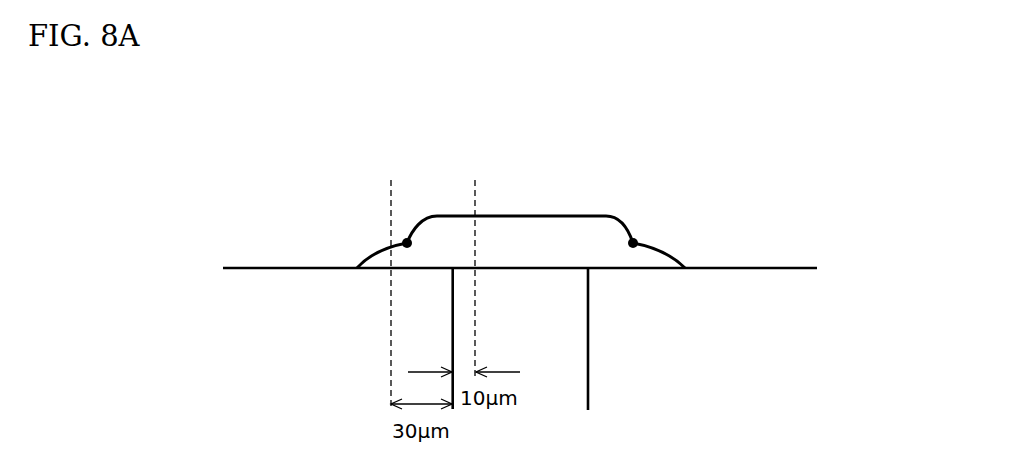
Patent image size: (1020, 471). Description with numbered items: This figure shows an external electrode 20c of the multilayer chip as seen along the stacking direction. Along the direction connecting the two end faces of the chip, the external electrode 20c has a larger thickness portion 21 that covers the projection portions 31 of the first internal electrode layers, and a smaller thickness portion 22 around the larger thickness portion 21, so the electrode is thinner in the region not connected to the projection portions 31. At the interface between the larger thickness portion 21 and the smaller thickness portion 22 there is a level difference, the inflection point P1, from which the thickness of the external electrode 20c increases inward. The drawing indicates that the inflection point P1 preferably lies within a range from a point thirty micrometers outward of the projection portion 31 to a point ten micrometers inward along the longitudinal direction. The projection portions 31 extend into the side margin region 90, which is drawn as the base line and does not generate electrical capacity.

The side margin region 90 is at (253, 292).
The projection portion 31 is at (528, 297).
The external electrode 20c is at (547, 191).
The larger thickness portion 21 is at (615, 228).
The smaller thickness portion 22 is at (660, 266).
The inflection point P1 is at (405, 242).